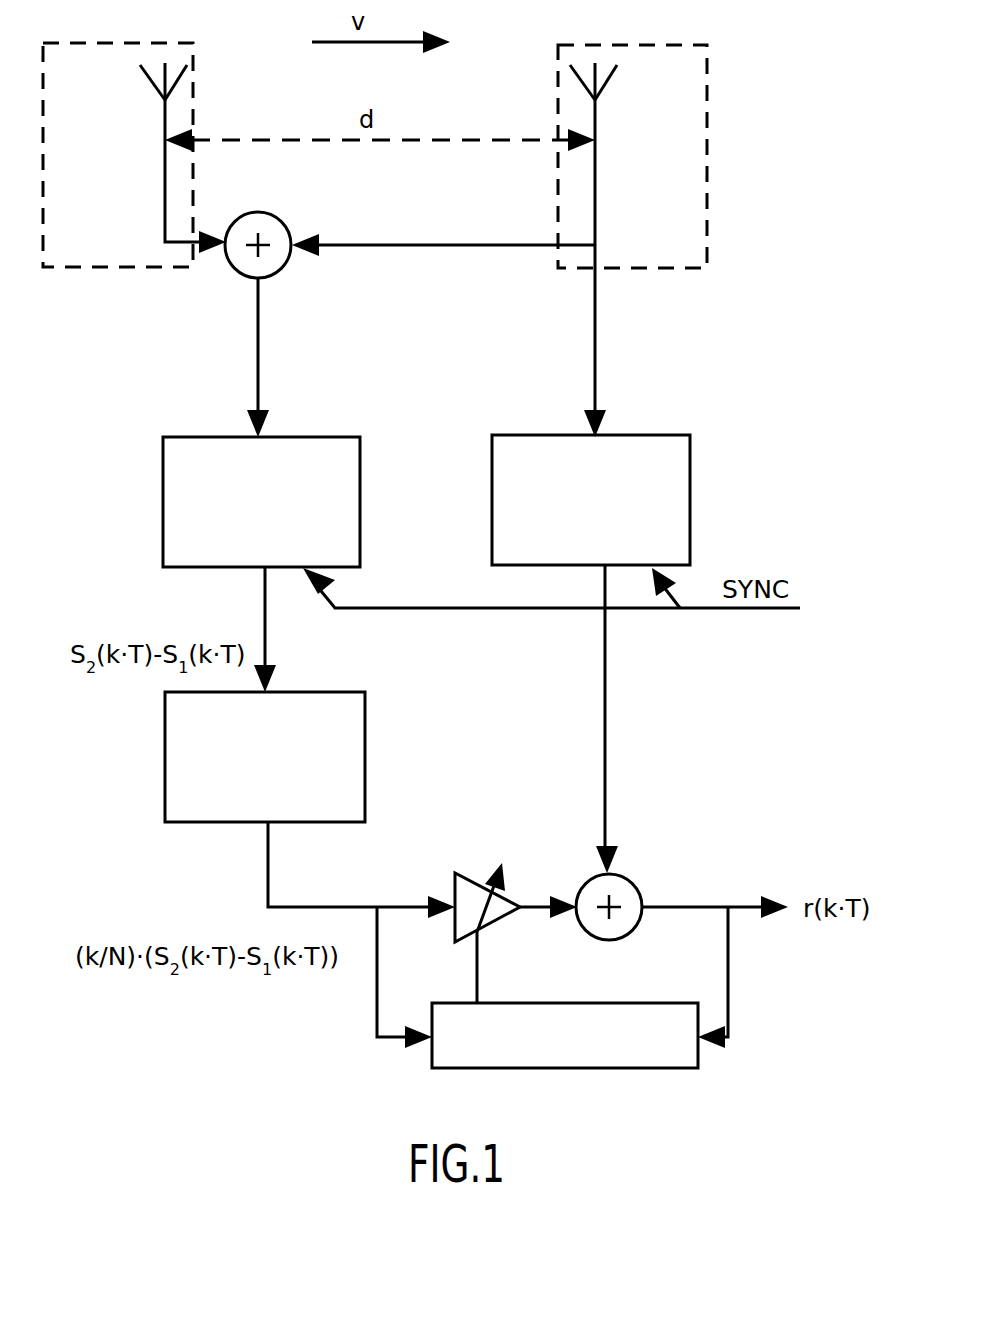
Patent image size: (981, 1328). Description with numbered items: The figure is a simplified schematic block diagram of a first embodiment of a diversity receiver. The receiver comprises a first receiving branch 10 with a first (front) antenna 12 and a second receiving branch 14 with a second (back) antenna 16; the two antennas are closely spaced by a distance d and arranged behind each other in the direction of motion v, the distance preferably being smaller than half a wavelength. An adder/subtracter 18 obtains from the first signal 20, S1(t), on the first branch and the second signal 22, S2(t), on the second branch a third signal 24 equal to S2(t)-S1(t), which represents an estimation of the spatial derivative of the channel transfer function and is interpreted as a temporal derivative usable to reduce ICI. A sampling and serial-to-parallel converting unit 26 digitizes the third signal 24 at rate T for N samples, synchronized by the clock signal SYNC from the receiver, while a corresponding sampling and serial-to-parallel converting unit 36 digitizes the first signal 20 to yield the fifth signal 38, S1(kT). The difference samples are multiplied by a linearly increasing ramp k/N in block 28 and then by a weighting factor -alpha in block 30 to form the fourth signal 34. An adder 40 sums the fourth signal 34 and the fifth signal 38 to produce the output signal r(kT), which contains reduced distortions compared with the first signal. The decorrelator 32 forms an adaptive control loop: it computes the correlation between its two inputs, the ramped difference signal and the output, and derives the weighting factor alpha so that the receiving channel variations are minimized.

The first receiving branch 10 is at (707, 260).
The first antenna 12 is at (603, 90).
The second receiving branch 14 is at (112, 268).
The second antenna 16 is at (150, 86).
The adder/subtracter 18 is at (290, 262).
The first signal 20 is at (597, 210).
The second signal 22 is at (163, 205).
The third signal 24 is at (259, 340).
The sampling and serial-to-parallel converting unit 26 is at (360, 492).
The ramp multiplication block 28 is at (365, 750).
The weighting block 30 is at (455, 882).
The decorrelator 32 is at (590, 1068).
The fourth signal 34 is at (540, 907).
The sampling and serial-to-parallel converting unit 36 is at (690, 493).
The fifth signal 38 is at (607, 752).
The adder 40 is at (633, 932).